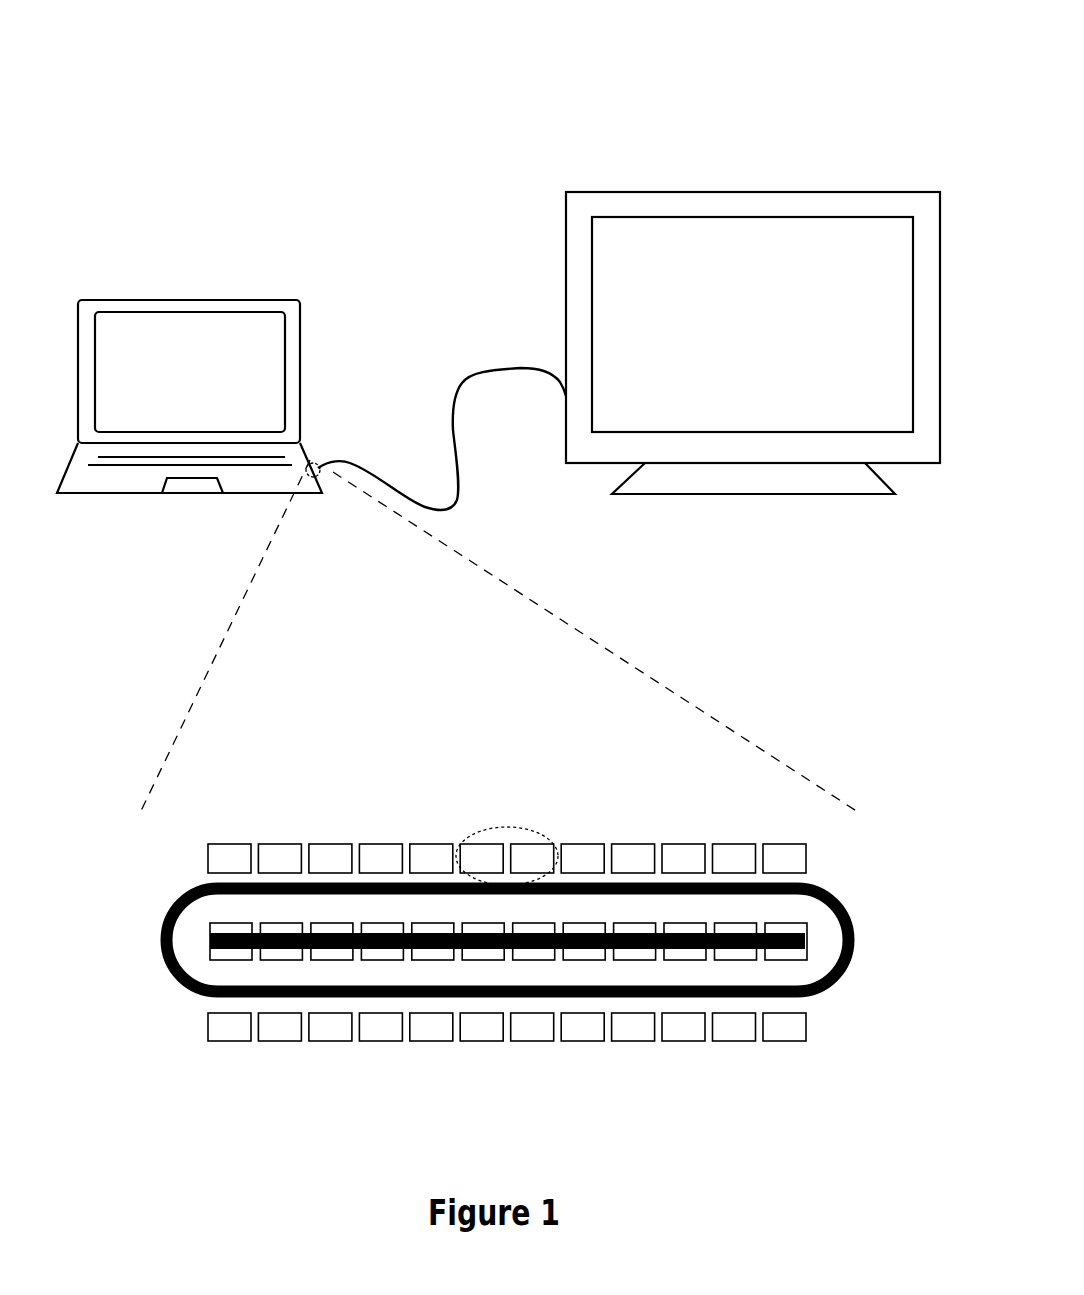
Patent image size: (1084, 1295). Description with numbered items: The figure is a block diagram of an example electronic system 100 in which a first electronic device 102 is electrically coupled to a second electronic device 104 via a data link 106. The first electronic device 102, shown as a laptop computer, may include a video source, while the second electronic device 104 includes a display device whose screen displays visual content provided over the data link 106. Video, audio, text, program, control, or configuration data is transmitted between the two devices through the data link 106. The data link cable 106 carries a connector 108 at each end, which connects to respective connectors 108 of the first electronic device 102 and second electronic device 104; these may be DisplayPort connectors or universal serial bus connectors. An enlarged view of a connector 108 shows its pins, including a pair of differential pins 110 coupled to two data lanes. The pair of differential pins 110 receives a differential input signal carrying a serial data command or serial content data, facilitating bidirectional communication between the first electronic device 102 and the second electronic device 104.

The electronic system 100 is at (656, 47).
The first electronic device 102 is at (172, 300).
The second electronic device 104 is at (827, 192).
The data link 106 is at (475, 372).
The connector 108 is at (313, 463).
The pair of differential pins 110 is at (505, 826).